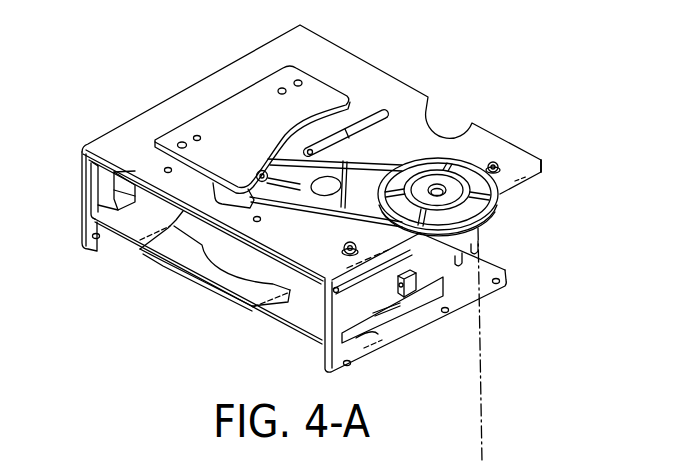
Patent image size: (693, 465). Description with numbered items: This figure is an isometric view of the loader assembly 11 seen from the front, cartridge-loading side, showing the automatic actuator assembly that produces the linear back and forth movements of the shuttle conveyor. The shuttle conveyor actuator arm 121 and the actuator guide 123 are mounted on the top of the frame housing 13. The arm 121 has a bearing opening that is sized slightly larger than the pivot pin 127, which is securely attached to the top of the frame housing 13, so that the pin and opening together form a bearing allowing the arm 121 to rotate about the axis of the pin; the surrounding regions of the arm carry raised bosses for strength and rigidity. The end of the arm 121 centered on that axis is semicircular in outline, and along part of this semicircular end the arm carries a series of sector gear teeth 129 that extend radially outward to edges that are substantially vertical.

The loader assembly 11 is at (126, 125).
The frame housing 13 is at (483, 127).
The shuttle conveyor actuator arm 121 is at (288, 215).
The actuator guide 123 is at (315, 81).
The pivot pin 127 is at (446, 192).
The sector gear teeth 129 is at (497, 219).